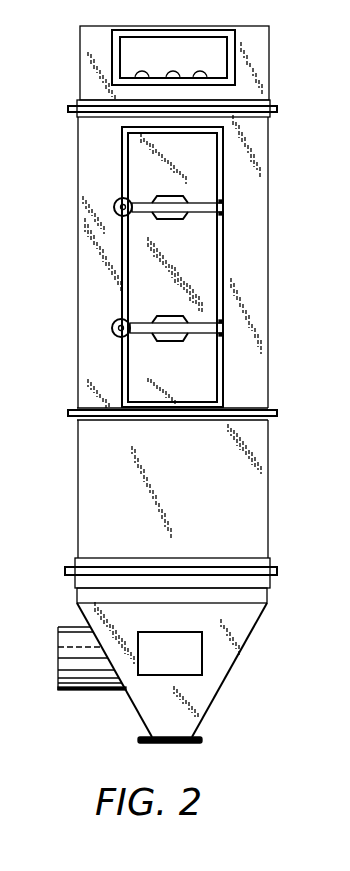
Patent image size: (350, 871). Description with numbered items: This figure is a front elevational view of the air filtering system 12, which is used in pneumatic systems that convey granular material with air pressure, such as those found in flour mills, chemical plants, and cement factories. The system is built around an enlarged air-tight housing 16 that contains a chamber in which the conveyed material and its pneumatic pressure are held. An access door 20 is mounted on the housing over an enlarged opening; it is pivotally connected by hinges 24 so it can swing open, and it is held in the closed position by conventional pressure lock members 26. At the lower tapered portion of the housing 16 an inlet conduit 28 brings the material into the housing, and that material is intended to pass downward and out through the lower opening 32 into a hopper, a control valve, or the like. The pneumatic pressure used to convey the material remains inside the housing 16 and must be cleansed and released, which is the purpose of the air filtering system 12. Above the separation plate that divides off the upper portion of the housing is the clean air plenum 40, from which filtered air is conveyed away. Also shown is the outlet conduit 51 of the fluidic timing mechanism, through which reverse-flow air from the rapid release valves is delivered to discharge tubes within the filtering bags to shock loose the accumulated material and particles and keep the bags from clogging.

The air filtering system 12 is at (54, 512).
The housing 16 is at (247, 482).
The access door 20 is at (137, 298).
The hinges 24 is at (224, 210).
The pressure lock members 26 is at (140, 207).
The inlet conduit 28 is at (67, 658).
The lower opening 32 is at (182, 743).
The clean air plenum 40 is at (262, 55).
The outlet conduit 51 is at (141, 73).